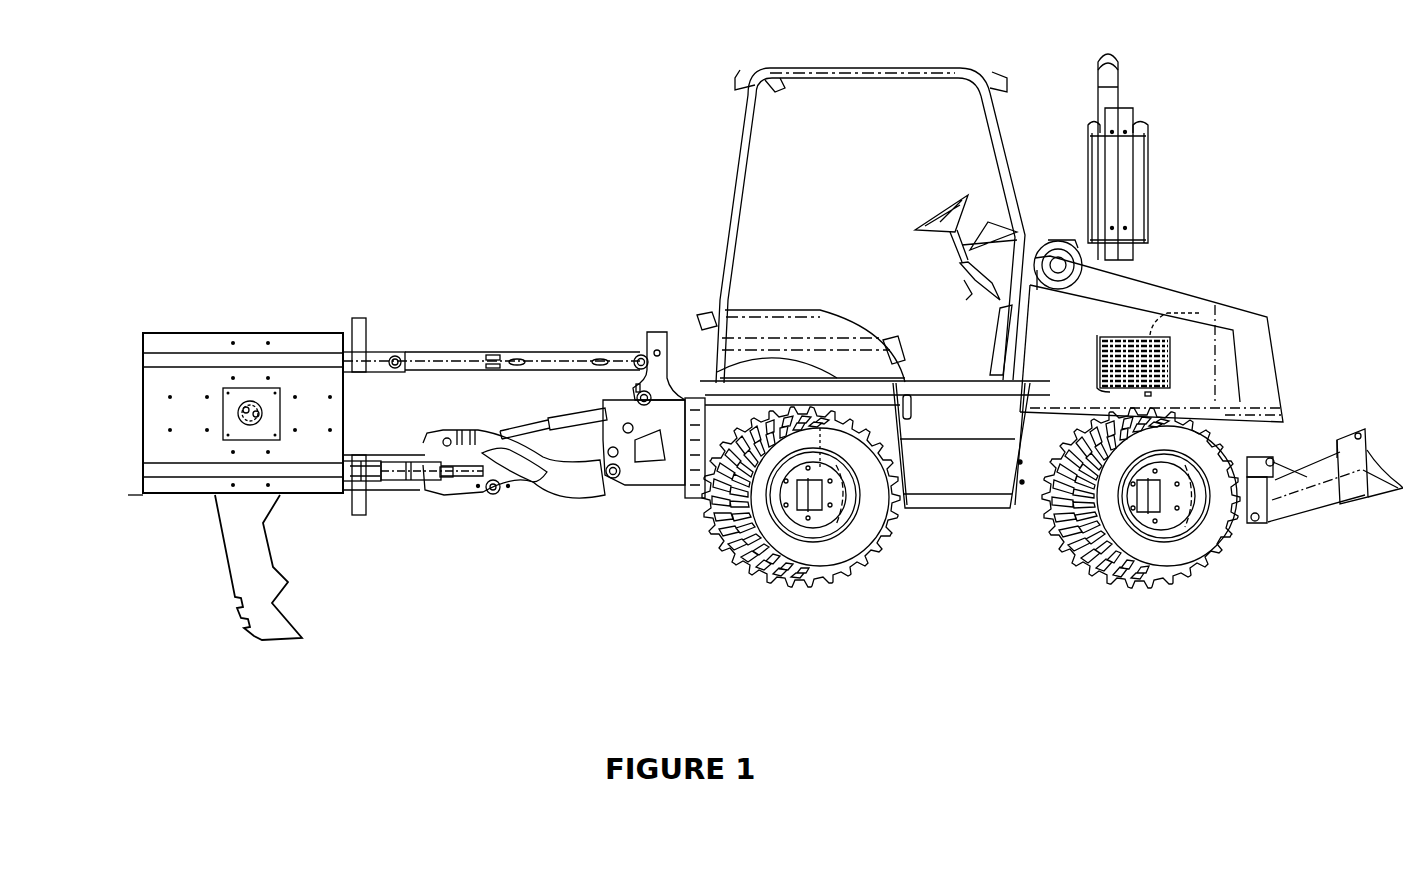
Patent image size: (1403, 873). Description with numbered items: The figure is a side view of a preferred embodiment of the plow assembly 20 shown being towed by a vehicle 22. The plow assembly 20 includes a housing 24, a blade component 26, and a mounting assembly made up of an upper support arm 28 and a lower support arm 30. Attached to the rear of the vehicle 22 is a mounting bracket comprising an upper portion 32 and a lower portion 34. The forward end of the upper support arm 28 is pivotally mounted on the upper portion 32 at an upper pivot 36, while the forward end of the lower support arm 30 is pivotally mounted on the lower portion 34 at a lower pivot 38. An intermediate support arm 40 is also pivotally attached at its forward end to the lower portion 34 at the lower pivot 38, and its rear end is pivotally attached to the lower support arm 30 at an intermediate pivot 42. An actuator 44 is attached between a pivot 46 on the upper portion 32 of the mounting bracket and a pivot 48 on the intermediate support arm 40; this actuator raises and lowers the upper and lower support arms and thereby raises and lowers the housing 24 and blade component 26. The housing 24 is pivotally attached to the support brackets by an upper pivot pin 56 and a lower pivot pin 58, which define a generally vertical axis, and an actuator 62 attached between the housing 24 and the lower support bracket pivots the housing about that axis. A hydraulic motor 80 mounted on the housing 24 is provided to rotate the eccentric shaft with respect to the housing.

The plow assembly 20 is at (272, 219).
The vehicle 22 is at (1183, 272).
The housing 24 is at (138, 397).
The blade component 26 is at (278, 548).
The upper support arm 28 is at (483, 348).
The lower support arm 30 is at (405, 458).
The upper portion of the mounting bracket 32 is at (670, 328).
The lower portion of the mounting bracket 34 is at (653, 490).
The upper pivot 36 is at (646, 328).
The lower pivot 38 is at (614, 483).
The intermediate support arm 40 is at (462, 428).
The intermediate pivot 42 is at (491, 495).
The actuator 44 is at (580, 408).
The pivot 46 is at (657, 395).
The pivot 48 is at (440, 435).
The upper pivot pin 56 is at (370, 310).
The lower pivot pin 58 is at (372, 515).
The actuator 62 is at (415, 490).
The hydraulic motor 80 is at (275, 413).